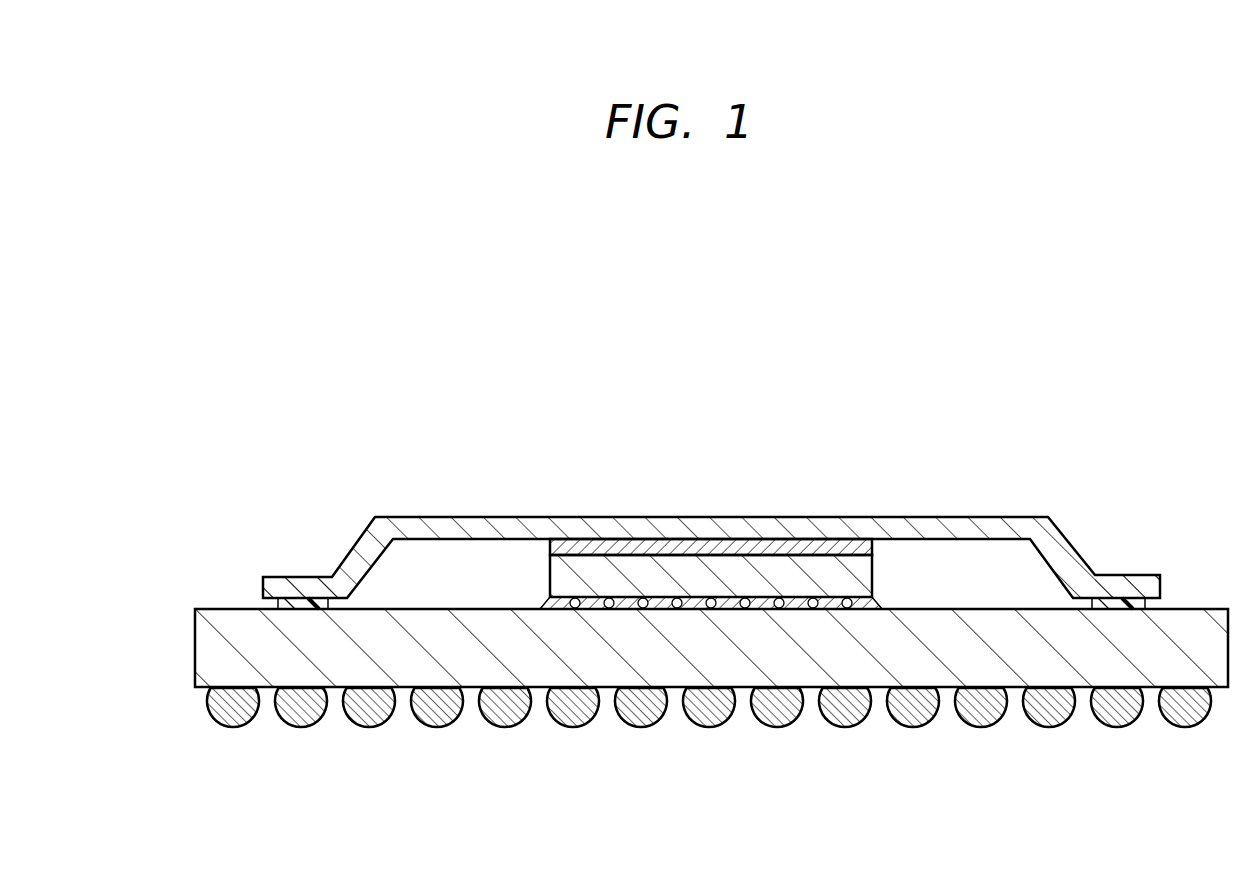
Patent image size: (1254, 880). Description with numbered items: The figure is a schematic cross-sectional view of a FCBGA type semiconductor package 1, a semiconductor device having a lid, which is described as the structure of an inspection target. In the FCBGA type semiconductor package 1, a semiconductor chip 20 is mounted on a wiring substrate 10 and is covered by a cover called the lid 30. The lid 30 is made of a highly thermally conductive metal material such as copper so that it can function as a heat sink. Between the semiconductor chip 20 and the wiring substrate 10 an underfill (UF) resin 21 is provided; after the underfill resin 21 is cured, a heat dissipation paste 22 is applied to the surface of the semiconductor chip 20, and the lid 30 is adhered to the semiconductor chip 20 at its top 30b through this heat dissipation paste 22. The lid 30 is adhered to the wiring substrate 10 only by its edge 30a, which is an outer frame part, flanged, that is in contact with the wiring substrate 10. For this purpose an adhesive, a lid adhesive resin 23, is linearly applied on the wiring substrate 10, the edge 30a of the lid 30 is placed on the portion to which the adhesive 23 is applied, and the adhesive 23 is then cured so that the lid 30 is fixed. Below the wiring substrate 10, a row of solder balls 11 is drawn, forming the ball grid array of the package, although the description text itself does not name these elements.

The FCBGA type semiconductor package 1 is at (730, 303).
The wiring substrate 10 is at (195, 650).
The solder balls 11 is at (580, 612).
The semiconductor chip 20 is at (657, 577).
The underfill resin 21 is at (862, 609).
The heat dissipation paste 22 is at (775, 548).
The adhesive 23 is at (305, 609).
The lid 30 is at (940, 517).
The edge 30a is at (1128, 575).
The top 30b is at (473, 517).